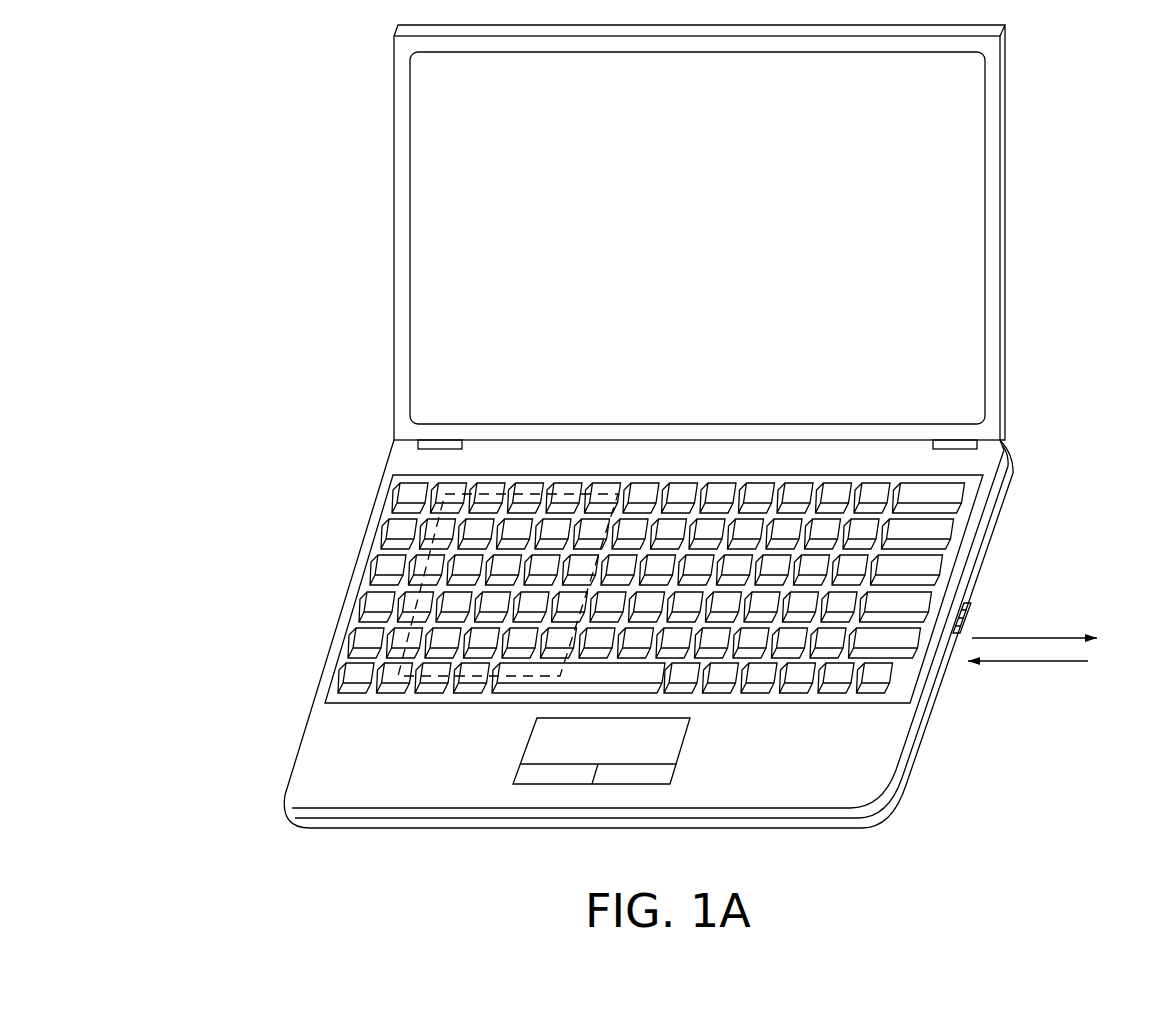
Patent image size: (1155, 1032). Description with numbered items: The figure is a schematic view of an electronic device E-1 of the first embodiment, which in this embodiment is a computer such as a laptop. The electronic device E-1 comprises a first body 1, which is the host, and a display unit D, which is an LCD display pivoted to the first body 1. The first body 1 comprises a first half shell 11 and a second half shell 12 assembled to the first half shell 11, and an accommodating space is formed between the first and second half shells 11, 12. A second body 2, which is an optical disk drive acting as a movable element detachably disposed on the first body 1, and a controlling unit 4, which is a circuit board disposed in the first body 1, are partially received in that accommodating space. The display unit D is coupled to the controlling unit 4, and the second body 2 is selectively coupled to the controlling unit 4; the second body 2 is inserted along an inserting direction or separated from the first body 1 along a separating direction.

The electronic device E-1 is at (225, 172).
The display unit D is at (905, 123).
The first body 1 is at (1000, 577).
The second body 2 is at (945, 687).
The controlling unit 4 is at (440, 535).
The first half shell 11 is at (378, 823).
The second half shell 12 is at (313, 812).